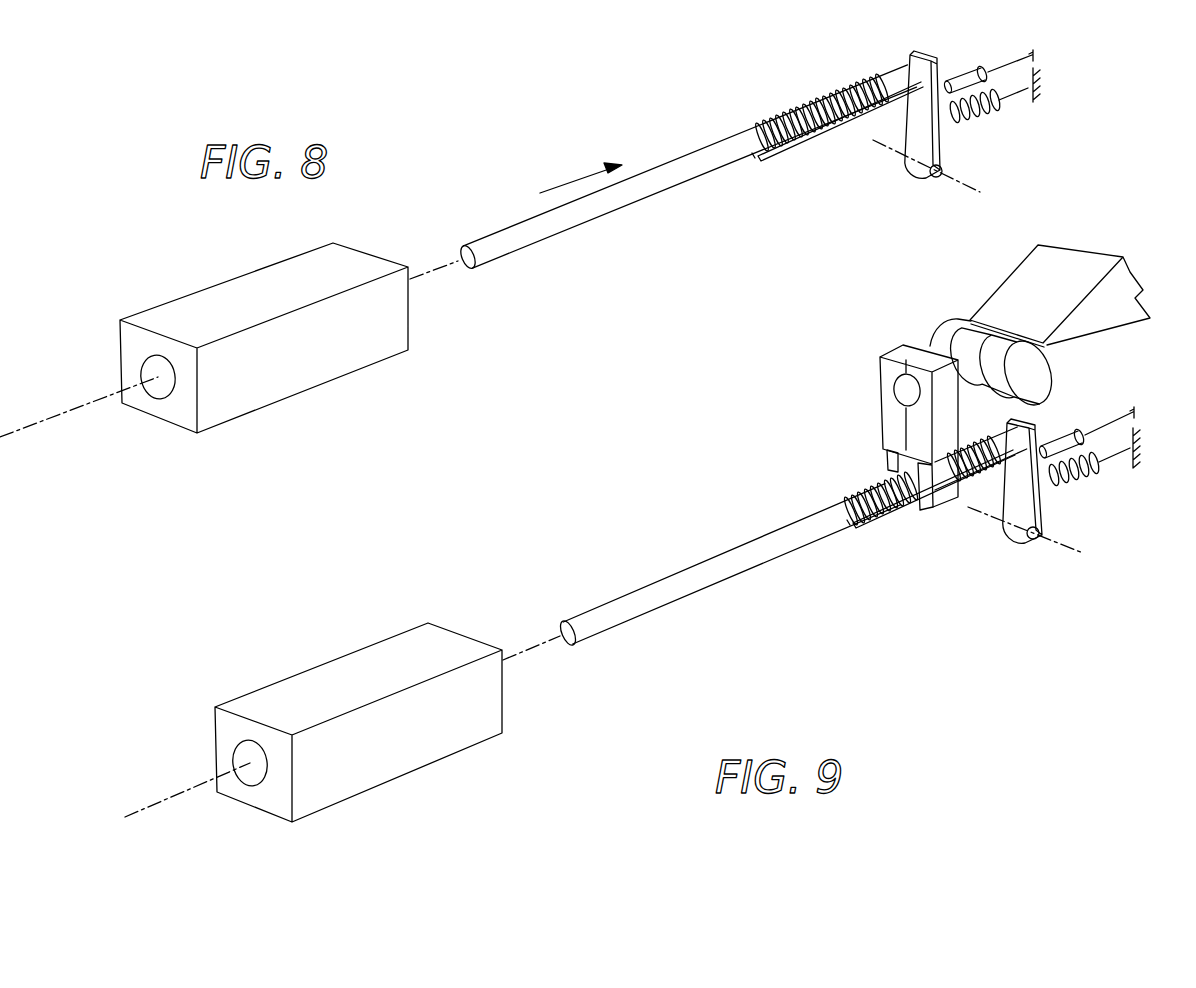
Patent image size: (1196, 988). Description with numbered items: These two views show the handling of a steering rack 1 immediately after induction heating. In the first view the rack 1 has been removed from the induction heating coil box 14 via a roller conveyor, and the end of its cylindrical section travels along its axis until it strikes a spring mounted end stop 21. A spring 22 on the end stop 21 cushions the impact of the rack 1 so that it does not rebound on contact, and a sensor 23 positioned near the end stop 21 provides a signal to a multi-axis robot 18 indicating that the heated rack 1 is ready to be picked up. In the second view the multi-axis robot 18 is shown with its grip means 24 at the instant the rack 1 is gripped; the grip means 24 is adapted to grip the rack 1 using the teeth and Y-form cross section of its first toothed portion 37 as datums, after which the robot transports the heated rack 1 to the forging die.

In FIG. 8, the rack 1 is at (660, 197).
In FIG. 9, the rack 1 is at (594, 599).
In FIG. 8, the induction heating coil box 14 is at (296, 374).
In FIG. 9, the induction heating coil box 14 is at (323, 670).
In FIG. 9, the multi-axis robot 18 is at (1100, 328).
In FIG. 8, the end stop 21 is at (927, 132).
In FIG. 9, the end stop 21 is at (1022, 510).
In FIG. 8, the spring 22 is at (980, 120).
In FIG. 9, the spring 22 is at (1083, 487).
In FIG. 8, the sensor 23 is at (966, 73).
In FIG. 9, the sensor 23 is at (1057, 438).
In FIG. 9, the grip means 24 is at (890, 418).
In FIG. 8, the first toothed portion 37 is at (886, 61).